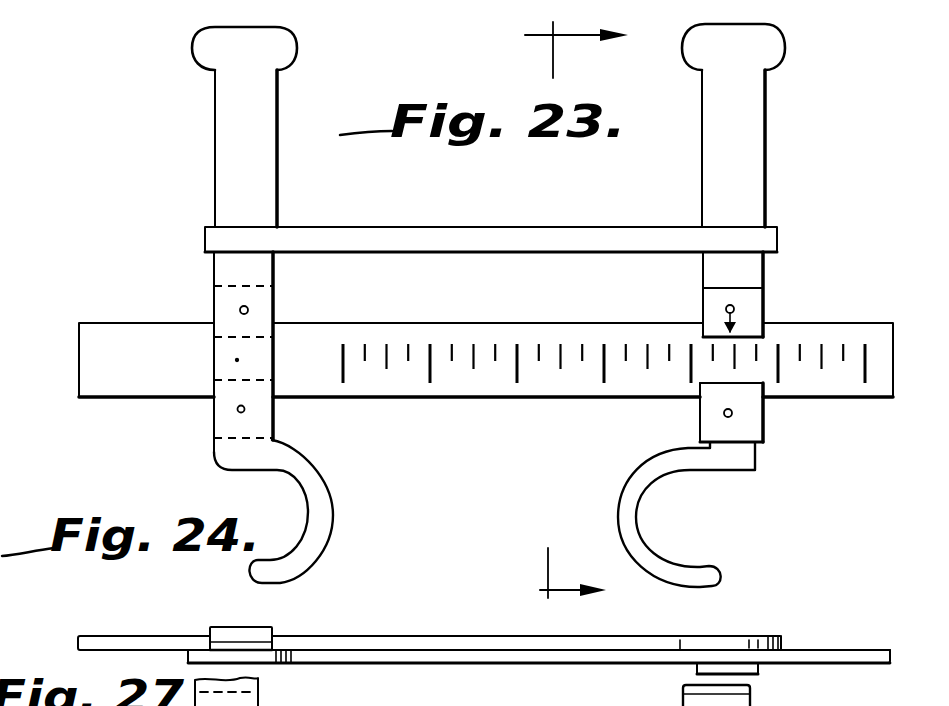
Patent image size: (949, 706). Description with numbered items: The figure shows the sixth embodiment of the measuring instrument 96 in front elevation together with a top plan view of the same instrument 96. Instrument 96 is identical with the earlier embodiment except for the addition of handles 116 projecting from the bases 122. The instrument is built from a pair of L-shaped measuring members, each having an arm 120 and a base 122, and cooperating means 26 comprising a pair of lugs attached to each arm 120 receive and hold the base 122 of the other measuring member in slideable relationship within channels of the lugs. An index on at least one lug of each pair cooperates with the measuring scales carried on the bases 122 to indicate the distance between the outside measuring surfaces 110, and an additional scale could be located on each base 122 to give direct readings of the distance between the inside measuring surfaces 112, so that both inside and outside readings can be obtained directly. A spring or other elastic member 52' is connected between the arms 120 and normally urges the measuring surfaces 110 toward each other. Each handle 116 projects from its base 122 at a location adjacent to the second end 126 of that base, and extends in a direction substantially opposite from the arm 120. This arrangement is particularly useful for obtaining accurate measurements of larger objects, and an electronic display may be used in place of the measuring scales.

In FIG. 23, the instrument 96 is at (782, 178).
In FIG. 23, the outside measuring surface 110 is at (297, 48).
In FIG. 24, the outside measuring surface 110 is at (298, 657).
In FIG. 23, the inside measuring surface 112 is at (196, 64).
In FIG. 24, the inside measuring surface 112 is at (186, 657).
In FIG. 23, the spring or elastic member 52' is at (491, 213).
In FIG. 23, the arm 120 is at (264, 268).
In FIG. 23, the second end of base 126 is at (276, 404).
In FIG. 23, the base 122 is at (456, 400).
In FIG. 24, the base 122 is at (380, 636).
In FIG. 23, the handle 116 is at (332, 520).
In FIG. 23, the cooperating means 26 is at (576, 50).
In FIG. 24, the cooperating means 26 is at (573, 573).